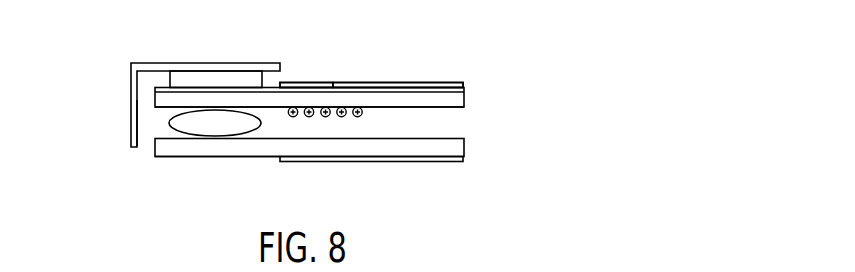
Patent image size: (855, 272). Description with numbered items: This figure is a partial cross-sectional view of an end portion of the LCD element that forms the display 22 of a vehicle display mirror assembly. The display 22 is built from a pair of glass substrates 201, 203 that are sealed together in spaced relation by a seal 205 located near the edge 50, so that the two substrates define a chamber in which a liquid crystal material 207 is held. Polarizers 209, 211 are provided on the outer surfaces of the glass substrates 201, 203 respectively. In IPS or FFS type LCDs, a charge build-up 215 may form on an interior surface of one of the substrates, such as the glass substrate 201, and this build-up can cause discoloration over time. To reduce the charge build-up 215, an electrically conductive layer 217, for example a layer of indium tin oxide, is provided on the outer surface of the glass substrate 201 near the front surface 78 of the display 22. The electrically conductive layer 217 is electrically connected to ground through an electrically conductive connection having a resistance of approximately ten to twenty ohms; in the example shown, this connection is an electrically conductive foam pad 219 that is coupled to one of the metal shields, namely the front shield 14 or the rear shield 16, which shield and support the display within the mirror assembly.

The front shield 14 is at (176, 78).
The rear shield 16 is at (127, 61).
The display 22 is at (212, 173).
The edge 50 is at (148, 123).
The front surface 78 is at (305, 79).
The glass substrate 201 is at (465, 96).
The glass substrate 203 is at (465, 144).
The seal 205 is at (205, 125).
The liquid crystal material 207 is at (390, 121).
The polarizer 209 is at (456, 82).
The polarizer 211 is at (456, 162).
The charge build-up 215 is at (327, 121).
The electrically conductive layer 217 is at (334, 80).
The electrically conductive foam pad 219 is at (221, 75).